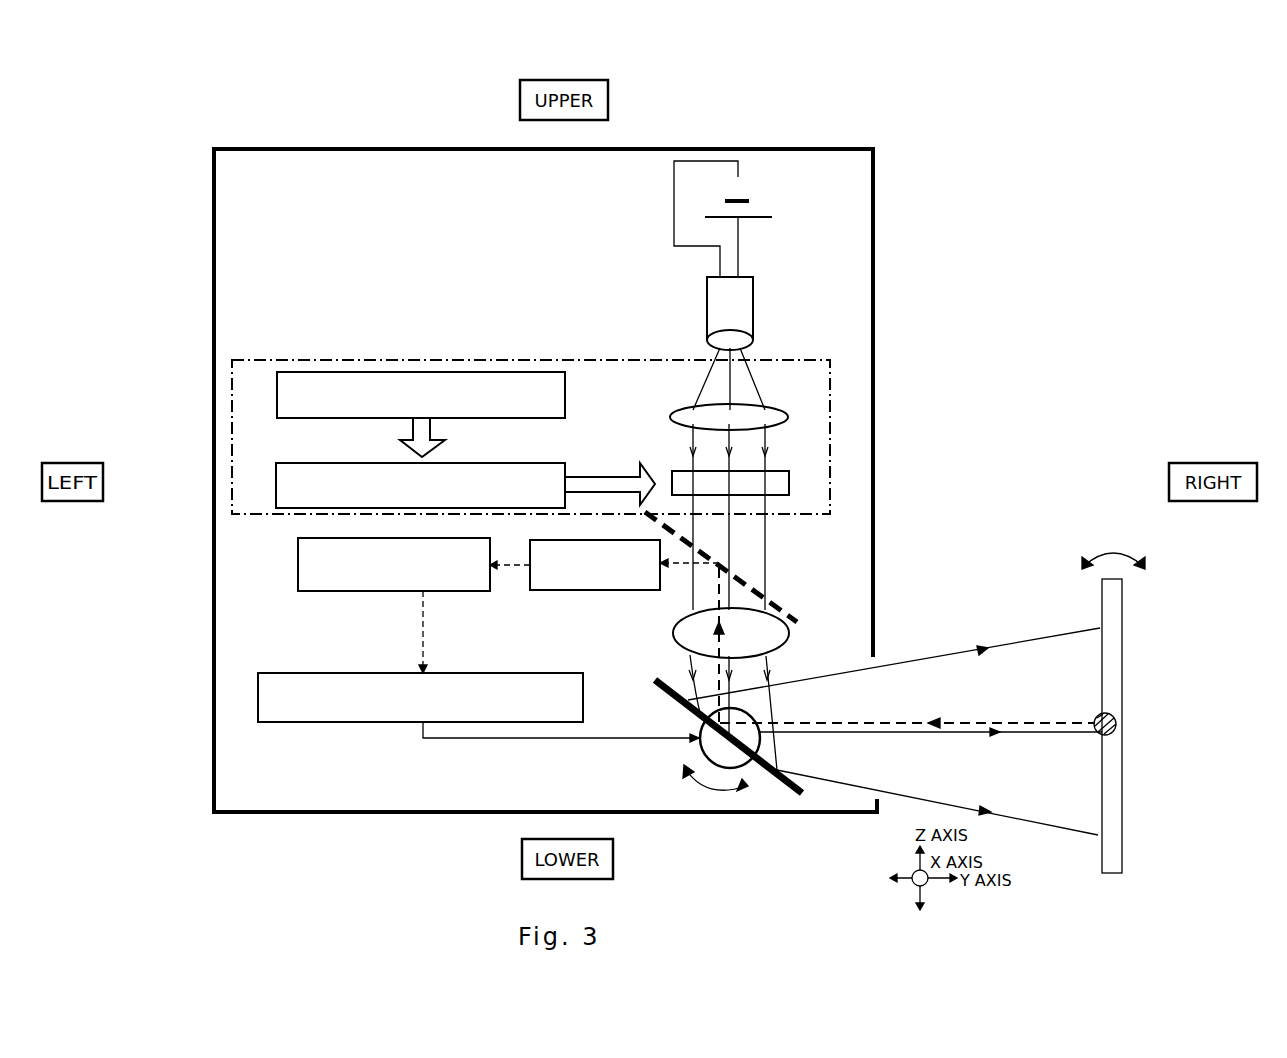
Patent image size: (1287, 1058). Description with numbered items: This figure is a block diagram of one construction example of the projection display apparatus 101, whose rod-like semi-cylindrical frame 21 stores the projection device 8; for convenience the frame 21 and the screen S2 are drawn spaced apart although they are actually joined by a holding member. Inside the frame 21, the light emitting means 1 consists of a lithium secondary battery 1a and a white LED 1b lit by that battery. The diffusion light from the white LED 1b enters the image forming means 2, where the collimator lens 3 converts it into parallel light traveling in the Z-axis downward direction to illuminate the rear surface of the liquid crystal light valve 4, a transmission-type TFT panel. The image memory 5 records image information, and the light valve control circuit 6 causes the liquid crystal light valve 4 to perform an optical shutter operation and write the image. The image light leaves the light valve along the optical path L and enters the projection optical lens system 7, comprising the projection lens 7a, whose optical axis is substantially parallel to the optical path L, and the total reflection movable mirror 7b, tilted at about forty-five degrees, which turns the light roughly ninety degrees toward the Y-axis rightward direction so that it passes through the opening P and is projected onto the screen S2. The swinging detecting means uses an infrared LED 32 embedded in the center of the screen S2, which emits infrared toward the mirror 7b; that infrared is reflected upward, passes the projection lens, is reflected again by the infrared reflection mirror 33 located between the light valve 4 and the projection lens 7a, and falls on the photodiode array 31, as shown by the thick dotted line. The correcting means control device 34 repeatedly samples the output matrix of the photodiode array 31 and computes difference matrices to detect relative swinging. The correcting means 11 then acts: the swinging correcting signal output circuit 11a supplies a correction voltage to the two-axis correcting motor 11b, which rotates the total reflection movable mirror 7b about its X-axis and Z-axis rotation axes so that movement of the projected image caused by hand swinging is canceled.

The projection display apparatus 101 is at (1112, 158).
The frame 21 is at (845, 149).
The light emitting means 1 is at (848, 254).
The lithium secondary battery 1a is at (763, 207).
The white LED 1b is at (753, 312).
The projection device 8 is at (686, 334).
The optical path L is at (731, 462).
The image forming means 2 is at (832, 392).
The collimator lens 3 is at (788, 417).
The liquid crystal light valve 4 is at (789, 483).
The image memory 5 is at (277, 397).
The light valve control circuit 6 is at (276, 487).
The correcting means control device 34 is at (298, 565).
The photodiode array 31 is at (590, 590).
The infrared reflection mirror 33 is at (797, 618).
The projection optical lens system 7 is at (834, 685).
The projection lens 7a is at (789, 638).
The total reflection movable mirror 7b is at (795, 778).
The correcting means 11 is at (509, 782).
The swinging correcting signal output circuit 11a is at (383, 722).
The two-axis correcting motor 11b is at (700, 747).
The opening P is at (875, 697).
The screen S2 is at (1122, 840).
The infrared LED 32 is at (1115, 718).